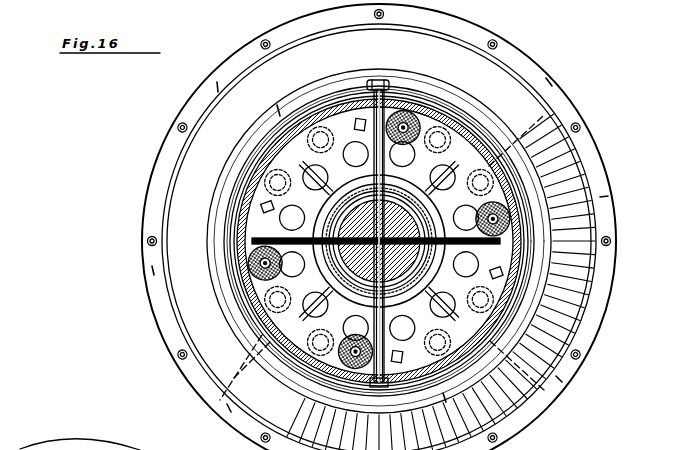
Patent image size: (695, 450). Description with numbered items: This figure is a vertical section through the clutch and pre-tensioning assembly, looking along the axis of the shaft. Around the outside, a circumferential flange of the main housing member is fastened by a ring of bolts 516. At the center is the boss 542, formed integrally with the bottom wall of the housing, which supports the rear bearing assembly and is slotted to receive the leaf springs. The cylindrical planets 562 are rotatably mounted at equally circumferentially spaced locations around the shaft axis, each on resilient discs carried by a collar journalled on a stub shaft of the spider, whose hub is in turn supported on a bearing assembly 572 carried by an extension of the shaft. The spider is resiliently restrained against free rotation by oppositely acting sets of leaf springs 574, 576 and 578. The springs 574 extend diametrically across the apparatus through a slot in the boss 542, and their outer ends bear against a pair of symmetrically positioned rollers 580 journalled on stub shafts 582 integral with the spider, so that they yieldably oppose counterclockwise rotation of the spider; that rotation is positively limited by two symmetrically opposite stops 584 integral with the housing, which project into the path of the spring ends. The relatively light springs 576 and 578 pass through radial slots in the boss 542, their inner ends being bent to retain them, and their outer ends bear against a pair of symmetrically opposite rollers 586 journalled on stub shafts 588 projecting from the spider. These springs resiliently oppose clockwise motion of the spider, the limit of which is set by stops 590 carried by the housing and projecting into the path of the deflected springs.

The bolts 516 is at (272, 39).
The boss 542 is at (345, 230).
The planets 562 is at (503, 120).
The bearing assembly 572 is at (484, 273).
The leaf springs 574 is at (389, 230).
The leaf springs 576 is at (252, 240).
The leaf springs 578 is at (537, 247).
The rollers 580 is at (410, 115).
The stub shafts 582 is at (390, 85).
The stops 584 is at (359, 119).
The rollers 586 is at (528, 193).
The stub shafts 588 is at (518, 216).
The stops 590 is at (262, 207).